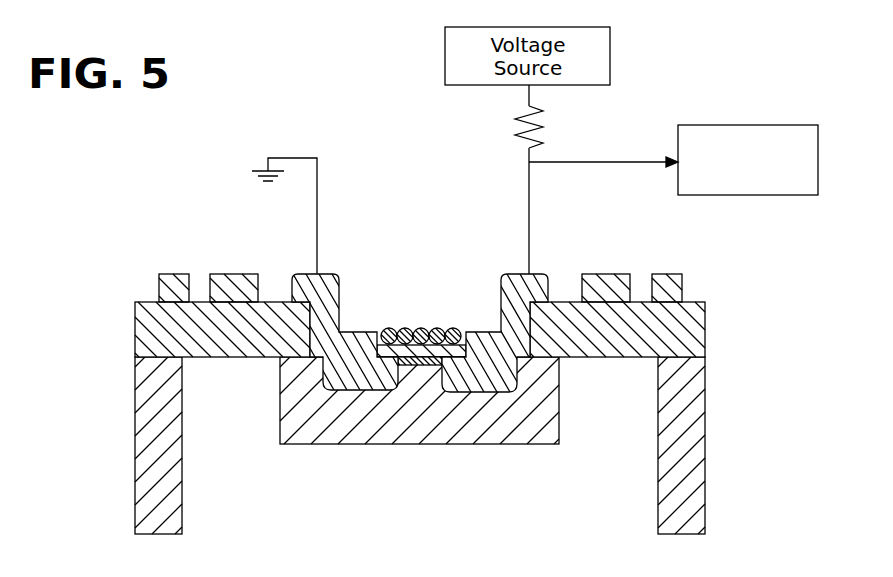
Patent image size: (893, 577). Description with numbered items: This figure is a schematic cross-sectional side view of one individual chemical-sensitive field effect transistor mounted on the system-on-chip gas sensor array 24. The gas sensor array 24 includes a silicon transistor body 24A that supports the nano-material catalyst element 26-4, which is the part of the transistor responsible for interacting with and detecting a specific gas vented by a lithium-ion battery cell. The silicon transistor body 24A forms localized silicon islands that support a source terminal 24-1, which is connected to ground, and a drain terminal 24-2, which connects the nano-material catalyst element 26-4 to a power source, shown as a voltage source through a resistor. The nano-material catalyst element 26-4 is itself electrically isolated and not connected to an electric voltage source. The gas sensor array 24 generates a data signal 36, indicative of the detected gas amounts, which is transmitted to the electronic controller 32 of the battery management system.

The gas sensor array 24 is at (455, 404).
The source terminal 24-1 is at (363, 392).
The drain terminal 24-2 is at (480, 393).
The silicon transistor body 24A is at (559, 444).
The nano-material catalyst element 26-4 is at (428, 314).
The electronic controller 32 is at (748, 160).
The data signal 36 is at (573, 160).